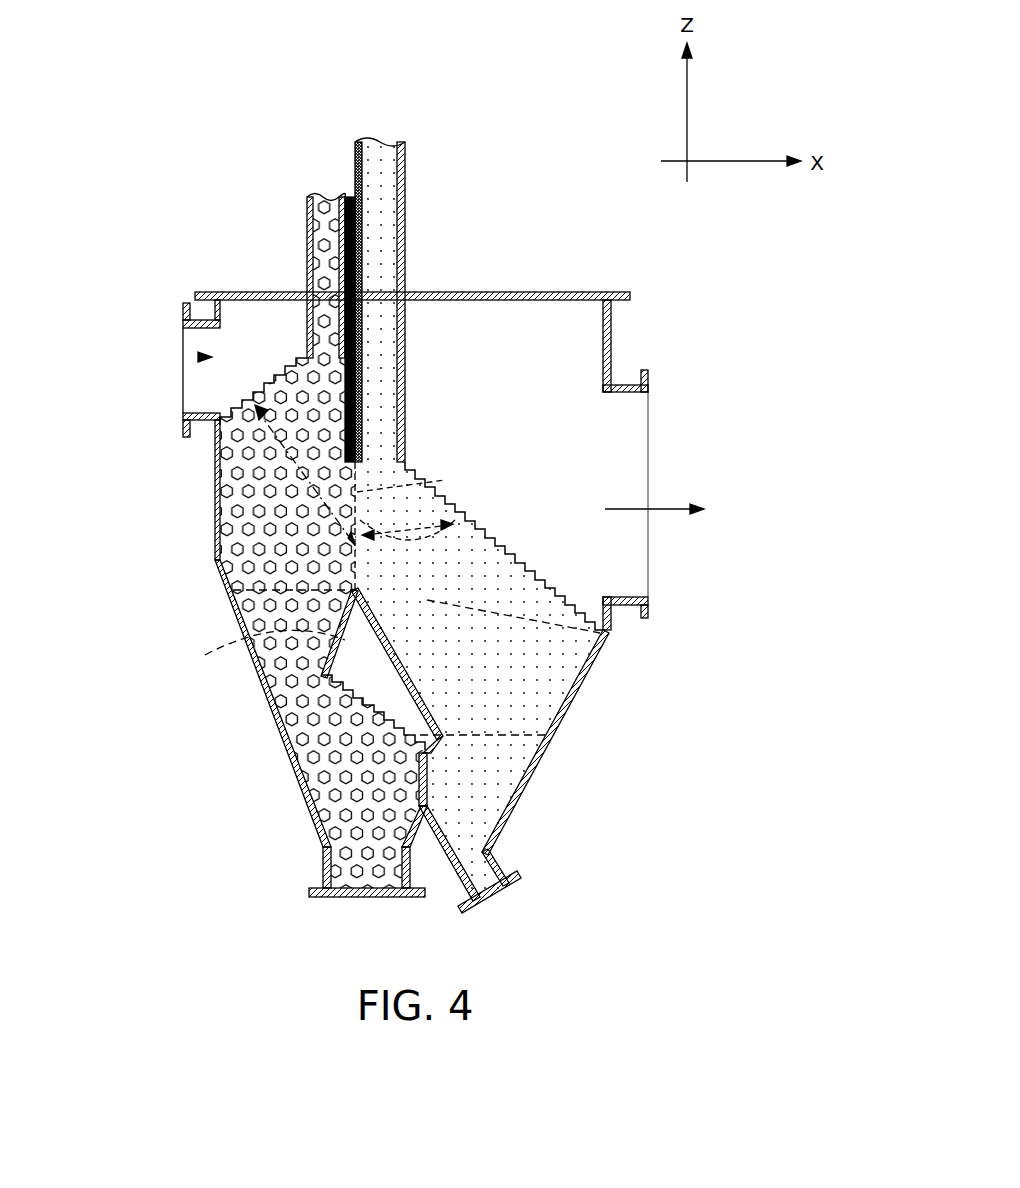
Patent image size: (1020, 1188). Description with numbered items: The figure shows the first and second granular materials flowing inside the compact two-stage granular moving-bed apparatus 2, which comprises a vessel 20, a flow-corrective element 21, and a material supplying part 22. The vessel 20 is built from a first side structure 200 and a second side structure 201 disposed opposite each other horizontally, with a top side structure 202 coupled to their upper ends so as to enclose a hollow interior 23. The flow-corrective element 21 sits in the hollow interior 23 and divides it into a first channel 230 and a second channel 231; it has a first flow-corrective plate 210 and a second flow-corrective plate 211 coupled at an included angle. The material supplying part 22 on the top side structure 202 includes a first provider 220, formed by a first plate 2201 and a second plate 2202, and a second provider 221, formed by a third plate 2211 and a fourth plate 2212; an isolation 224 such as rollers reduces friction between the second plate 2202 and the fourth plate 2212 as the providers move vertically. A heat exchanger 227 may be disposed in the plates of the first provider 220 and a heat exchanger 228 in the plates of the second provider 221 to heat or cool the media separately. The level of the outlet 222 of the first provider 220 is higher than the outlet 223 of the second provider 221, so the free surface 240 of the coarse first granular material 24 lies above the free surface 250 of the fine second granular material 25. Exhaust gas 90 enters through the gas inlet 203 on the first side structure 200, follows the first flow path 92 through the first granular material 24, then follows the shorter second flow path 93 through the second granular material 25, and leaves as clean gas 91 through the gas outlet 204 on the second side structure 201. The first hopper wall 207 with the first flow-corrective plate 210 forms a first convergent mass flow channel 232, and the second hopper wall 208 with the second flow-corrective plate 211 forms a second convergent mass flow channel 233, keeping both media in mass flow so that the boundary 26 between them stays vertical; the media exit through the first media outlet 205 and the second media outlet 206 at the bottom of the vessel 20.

The compact two-stage granular moving-bed apparatus 2 is at (180, 195).
The vessel 20 is at (205, 565).
The first side structure 200 is at (217, 498).
The second side structure 201 is at (613, 615).
The top side structure 202 is at (498, 292).
The gas inlet 203 is at (190, 385).
The gas outlet 204 is at (627, 458).
The first media outlet 205 is at (368, 893).
The second media outlet 206 is at (493, 888).
The first hopper wall 207 is at (263, 688).
The second hopper wall 208 is at (575, 708).
The flow-corrective element 21 is at (403, 568).
The first flow-corrective plate 210 is at (333, 642).
The second flow-corrective plate 211 is at (400, 685).
The material supplying part 22 is at (300, 200).
The first provider 220 is at (217, 213).
The first plate 2201 is at (307, 235).
The second plate 2202 is at (338, 262).
The second provider 221 is at (497, 150).
The third plate 2211 is at (405, 185).
The fourth plate 2212 is at (383, 218).
The outlet of the first provider 222 is at (330, 353).
The outlet of the second provider 223 is at (407, 455).
The isolation 224 is at (365, 242).
The heat exchanger 227 is at (352, 208).
The heat exchanger 228 is at (365, 170).
The hollow interior 23 is at (481, 390).
The first channel 230 is at (274, 572).
The second channel 231 is at (449, 576).
The first convergent mass flow channel 232 is at (255, 605).
The second convergent mass flow channel 233 is at (527, 742).
The first granular material 24 is at (218, 510).
The free surface of the first granular material 240 is at (265, 383).
The second granular material 25 is at (587, 682).
The free surface of the second granular material 250 is at (510, 540).
The boundary 26 is at (413, 479).
The exhaust gas 90 is at (140, 362).
The clean gas 91 is at (660, 510).
The first flow path 92 is at (287, 458).
The second flow path 93 is at (455, 530).